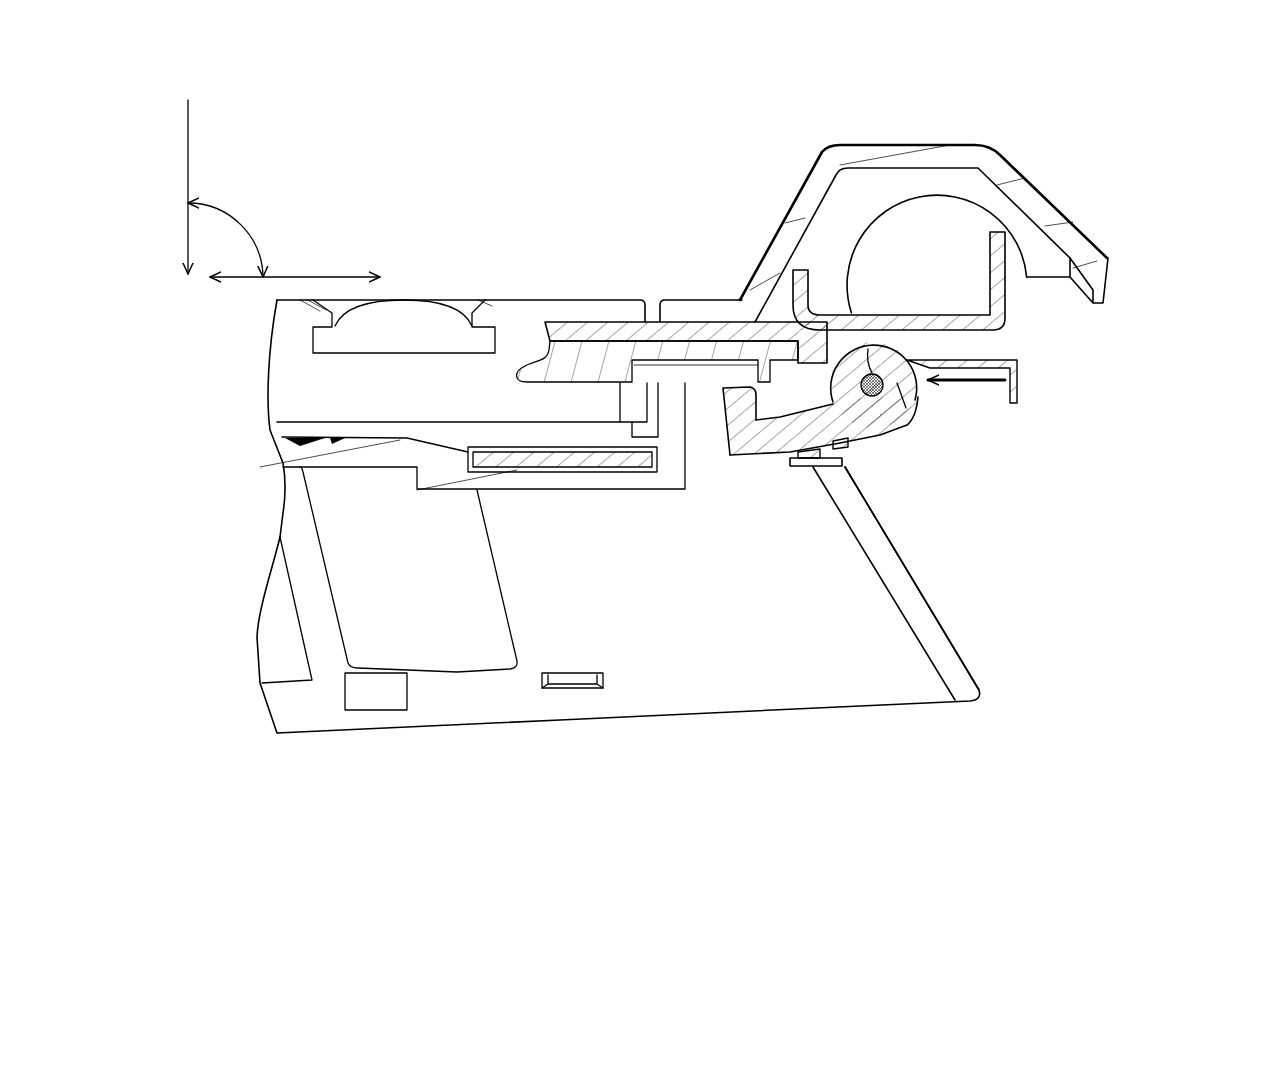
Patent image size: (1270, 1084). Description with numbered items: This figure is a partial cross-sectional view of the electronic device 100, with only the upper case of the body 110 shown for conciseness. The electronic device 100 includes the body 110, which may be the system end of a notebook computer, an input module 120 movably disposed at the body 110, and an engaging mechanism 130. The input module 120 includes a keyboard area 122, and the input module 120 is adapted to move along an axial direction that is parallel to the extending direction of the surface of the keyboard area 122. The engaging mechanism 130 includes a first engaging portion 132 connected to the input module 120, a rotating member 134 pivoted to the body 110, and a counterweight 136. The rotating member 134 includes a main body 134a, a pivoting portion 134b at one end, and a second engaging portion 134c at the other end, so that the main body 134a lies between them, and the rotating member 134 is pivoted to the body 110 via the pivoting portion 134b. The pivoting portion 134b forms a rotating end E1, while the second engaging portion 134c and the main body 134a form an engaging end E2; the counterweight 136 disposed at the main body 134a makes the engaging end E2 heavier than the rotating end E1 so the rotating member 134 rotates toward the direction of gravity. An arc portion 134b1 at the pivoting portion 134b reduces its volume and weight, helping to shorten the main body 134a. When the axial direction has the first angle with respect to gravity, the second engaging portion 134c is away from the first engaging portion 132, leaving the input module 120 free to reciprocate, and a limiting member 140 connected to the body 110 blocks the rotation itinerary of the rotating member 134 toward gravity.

The electronic device 100 is at (1113, 150).
The body 110 is at (870, 680).
The input module 120 is at (537, 292).
The keyboard area 122 is at (523, 313).
The engaging mechanism 130 is at (839, 476).
The first engaging portion 132 is at (783, 360).
The rotating member 134 is at (900, 450).
The main body 134a is at (787, 433).
The pivoting portion 134b is at (920, 414).
The arc portion 134b1 is at (916, 406).
The second engaging portion 134c is at (738, 425).
The counterweight 136 is at (852, 457).
The limiting member 140 is at (815, 467).
The rotating end E1 is at (935, 379).
The engaging end E2 is at (706, 414).